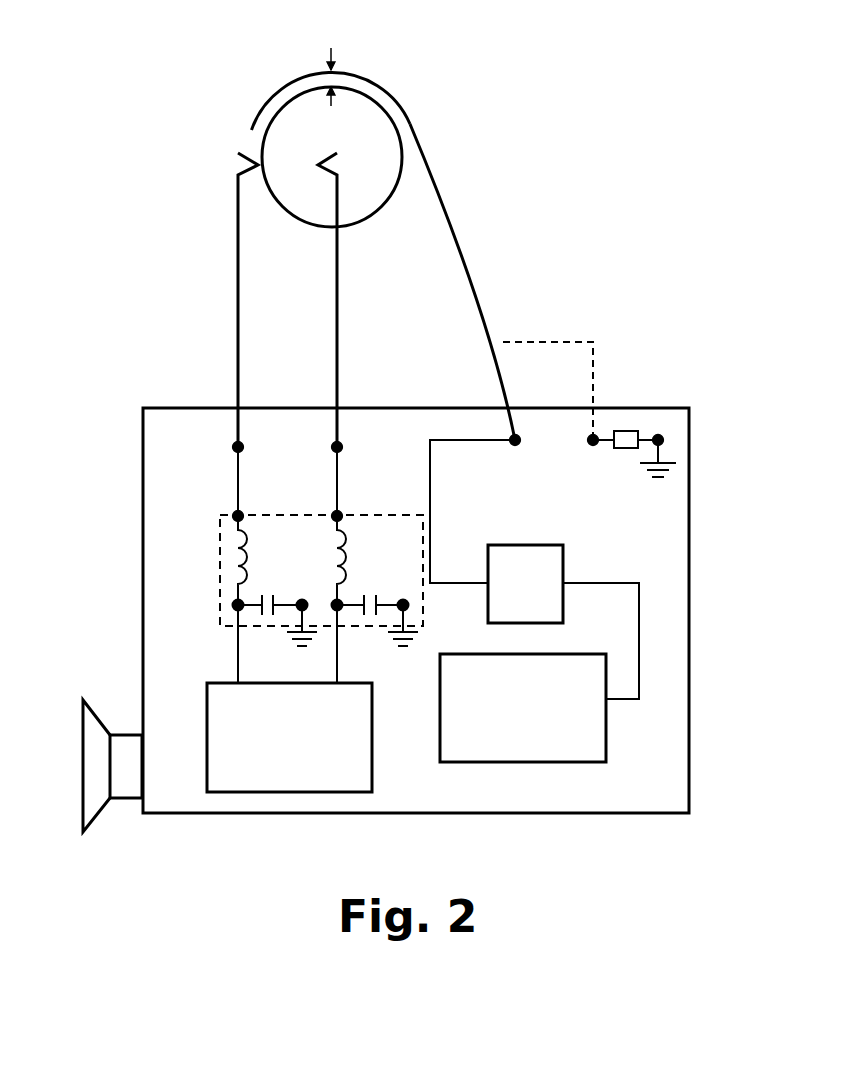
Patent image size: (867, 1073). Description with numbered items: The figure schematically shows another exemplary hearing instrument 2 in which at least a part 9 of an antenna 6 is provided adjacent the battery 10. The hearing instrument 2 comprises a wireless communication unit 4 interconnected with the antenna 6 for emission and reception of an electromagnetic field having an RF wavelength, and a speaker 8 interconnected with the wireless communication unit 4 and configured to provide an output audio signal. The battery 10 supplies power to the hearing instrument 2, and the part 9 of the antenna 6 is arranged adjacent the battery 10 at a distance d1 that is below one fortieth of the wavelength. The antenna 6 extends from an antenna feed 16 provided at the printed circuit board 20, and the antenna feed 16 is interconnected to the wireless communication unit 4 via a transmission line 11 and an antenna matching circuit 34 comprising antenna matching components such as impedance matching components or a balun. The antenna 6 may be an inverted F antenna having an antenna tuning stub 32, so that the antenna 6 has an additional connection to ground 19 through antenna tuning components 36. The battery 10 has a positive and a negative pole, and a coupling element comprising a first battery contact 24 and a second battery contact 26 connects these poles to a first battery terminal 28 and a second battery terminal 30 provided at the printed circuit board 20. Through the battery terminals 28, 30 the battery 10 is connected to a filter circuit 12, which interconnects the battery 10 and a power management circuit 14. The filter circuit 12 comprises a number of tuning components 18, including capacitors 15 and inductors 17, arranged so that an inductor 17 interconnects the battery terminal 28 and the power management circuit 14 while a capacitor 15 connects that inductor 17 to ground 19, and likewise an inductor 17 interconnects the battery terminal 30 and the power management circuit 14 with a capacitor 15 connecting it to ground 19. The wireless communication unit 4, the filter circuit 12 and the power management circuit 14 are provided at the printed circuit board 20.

The hearing instrument 2 is at (61, 67).
The wireless communication unit 4 is at (607, 723).
The antenna 6 is at (463, 250).
The speaker 8 is at (130, 800).
The part of the antenna 9 is at (307, 72).
The battery 10 is at (250, 137).
The distance d1 is at (347, 58).
The transmission line 11 is at (430, 480).
The filter circuit 12 is at (213, 578).
The power management circuit 14 is at (207, 723).
The capacitor 15 is at (272, 585).
The antenna feed 16 is at (508, 440).
The inductor 17 is at (220, 557).
The tuning components 18 is at (368, 590).
The ground 19 is at (678, 468).
The printed circuit board 20 is at (690, 775).
The first battery contact 24 is at (237, 285).
The second battery contact 26 is at (337, 290).
The first battery terminal 28 is at (233, 448).
The second battery terminal 30 is at (342, 446).
The antenna tuning stub 32 is at (598, 377).
The antenna matching circuit 34 is at (563, 562).
The antenna tuning components 36 is at (680, 433).